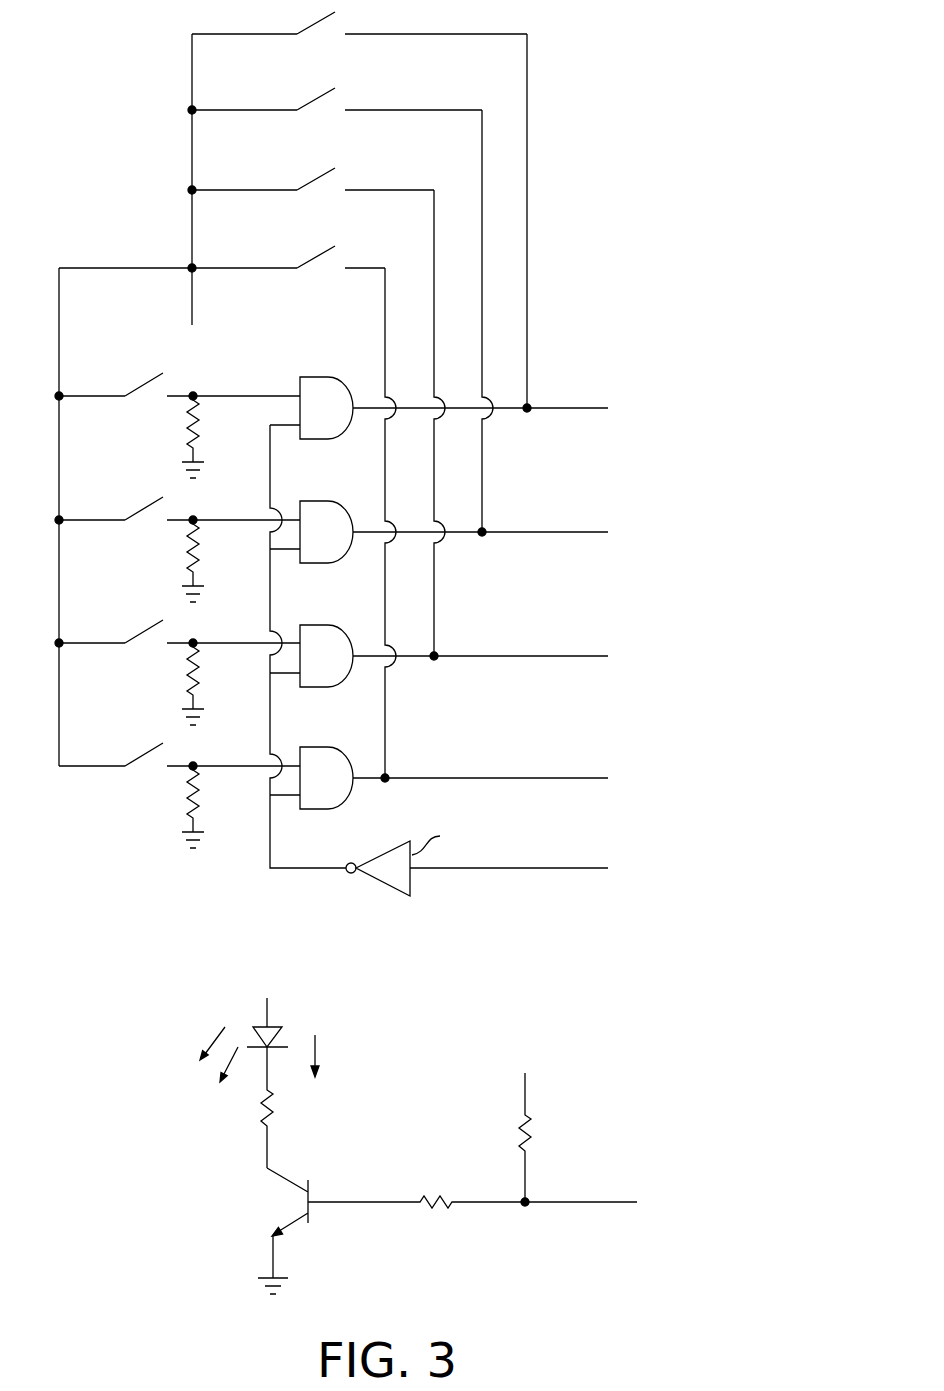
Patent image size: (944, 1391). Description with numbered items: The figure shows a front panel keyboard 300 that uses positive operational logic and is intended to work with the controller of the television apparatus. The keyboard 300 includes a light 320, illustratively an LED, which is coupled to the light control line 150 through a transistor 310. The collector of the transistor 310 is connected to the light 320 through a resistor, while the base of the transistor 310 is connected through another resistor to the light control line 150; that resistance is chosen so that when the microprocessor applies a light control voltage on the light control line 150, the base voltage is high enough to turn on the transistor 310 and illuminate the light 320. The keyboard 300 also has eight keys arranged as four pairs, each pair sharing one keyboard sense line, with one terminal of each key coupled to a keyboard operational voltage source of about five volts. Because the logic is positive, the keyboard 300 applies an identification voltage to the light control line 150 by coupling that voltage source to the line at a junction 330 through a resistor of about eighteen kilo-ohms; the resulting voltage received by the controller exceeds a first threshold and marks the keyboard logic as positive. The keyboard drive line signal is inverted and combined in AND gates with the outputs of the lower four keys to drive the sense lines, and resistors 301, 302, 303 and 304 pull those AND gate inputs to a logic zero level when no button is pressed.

The front panel keyboard 300 is at (353, 657).
The resistor 301 is at (188, 433).
The resistor 302 is at (188, 557).
The resistor 303 is at (188, 680).
The resistor 304 is at (188, 803).
The transistor 310 is at (290, 1224).
The light 320 is at (253, 1027).
The junction 330 is at (525, 1205).
The light control line 150 is at (610, 1203).